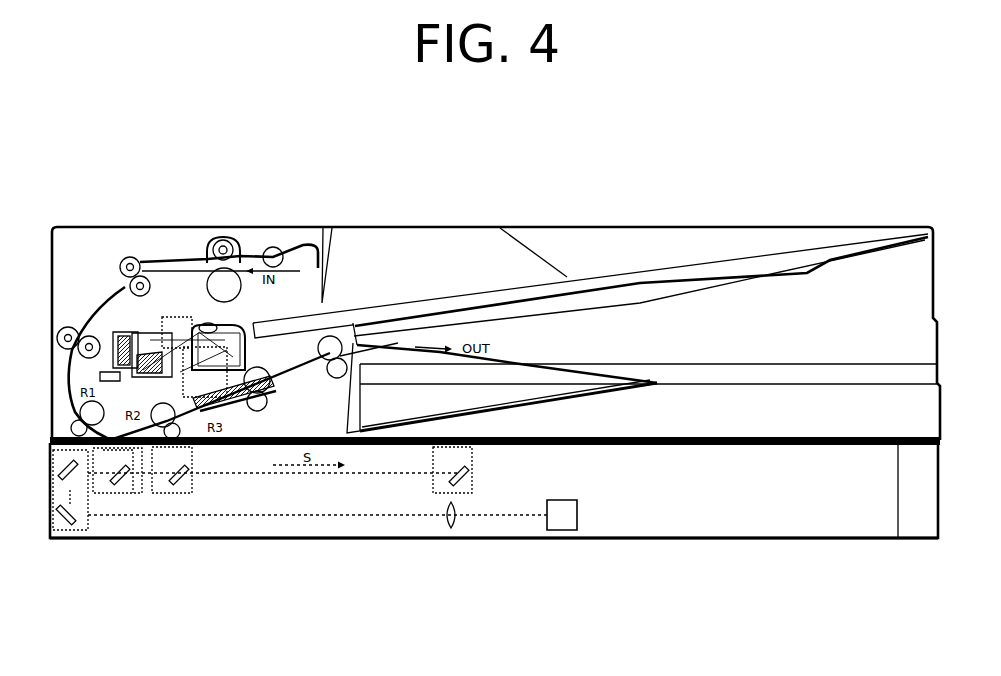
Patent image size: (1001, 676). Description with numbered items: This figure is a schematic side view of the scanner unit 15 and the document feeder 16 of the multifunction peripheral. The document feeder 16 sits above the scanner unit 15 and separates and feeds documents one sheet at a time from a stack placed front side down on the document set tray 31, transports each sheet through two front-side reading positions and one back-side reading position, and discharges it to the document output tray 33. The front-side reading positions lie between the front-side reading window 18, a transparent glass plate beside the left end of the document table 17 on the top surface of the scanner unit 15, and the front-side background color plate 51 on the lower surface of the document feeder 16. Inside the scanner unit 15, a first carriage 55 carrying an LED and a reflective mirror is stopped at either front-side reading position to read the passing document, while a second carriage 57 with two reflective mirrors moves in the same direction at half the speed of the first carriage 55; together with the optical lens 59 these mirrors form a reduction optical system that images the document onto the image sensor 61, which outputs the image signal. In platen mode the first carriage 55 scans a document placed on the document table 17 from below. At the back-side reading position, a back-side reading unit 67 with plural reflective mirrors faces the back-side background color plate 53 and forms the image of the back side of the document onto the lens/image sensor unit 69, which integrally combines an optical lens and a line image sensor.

The scanner unit 15 is at (783, 540).
The document feeder 16 is at (612, 242).
The document table 17 is at (617, 443).
The front-side reading window 18 is at (130, 470).
The document set tray 31 is at (362, 302).
The document output tray 33 is at (673, 353).
The front-side background color plate 51 is at (55, 290).
The back-side background color plate 53 is at (218, 385).
The first carriage 55 is at (100, 487).
The second carriage 57 is at (80, 518).
The optical lens 59 is at (455, 520).
The image sensor 61 is at (562, 520).
The back-side reading unit 67 is at (200, 343).
The lens/image sensor unit 69 is at (150, 337).